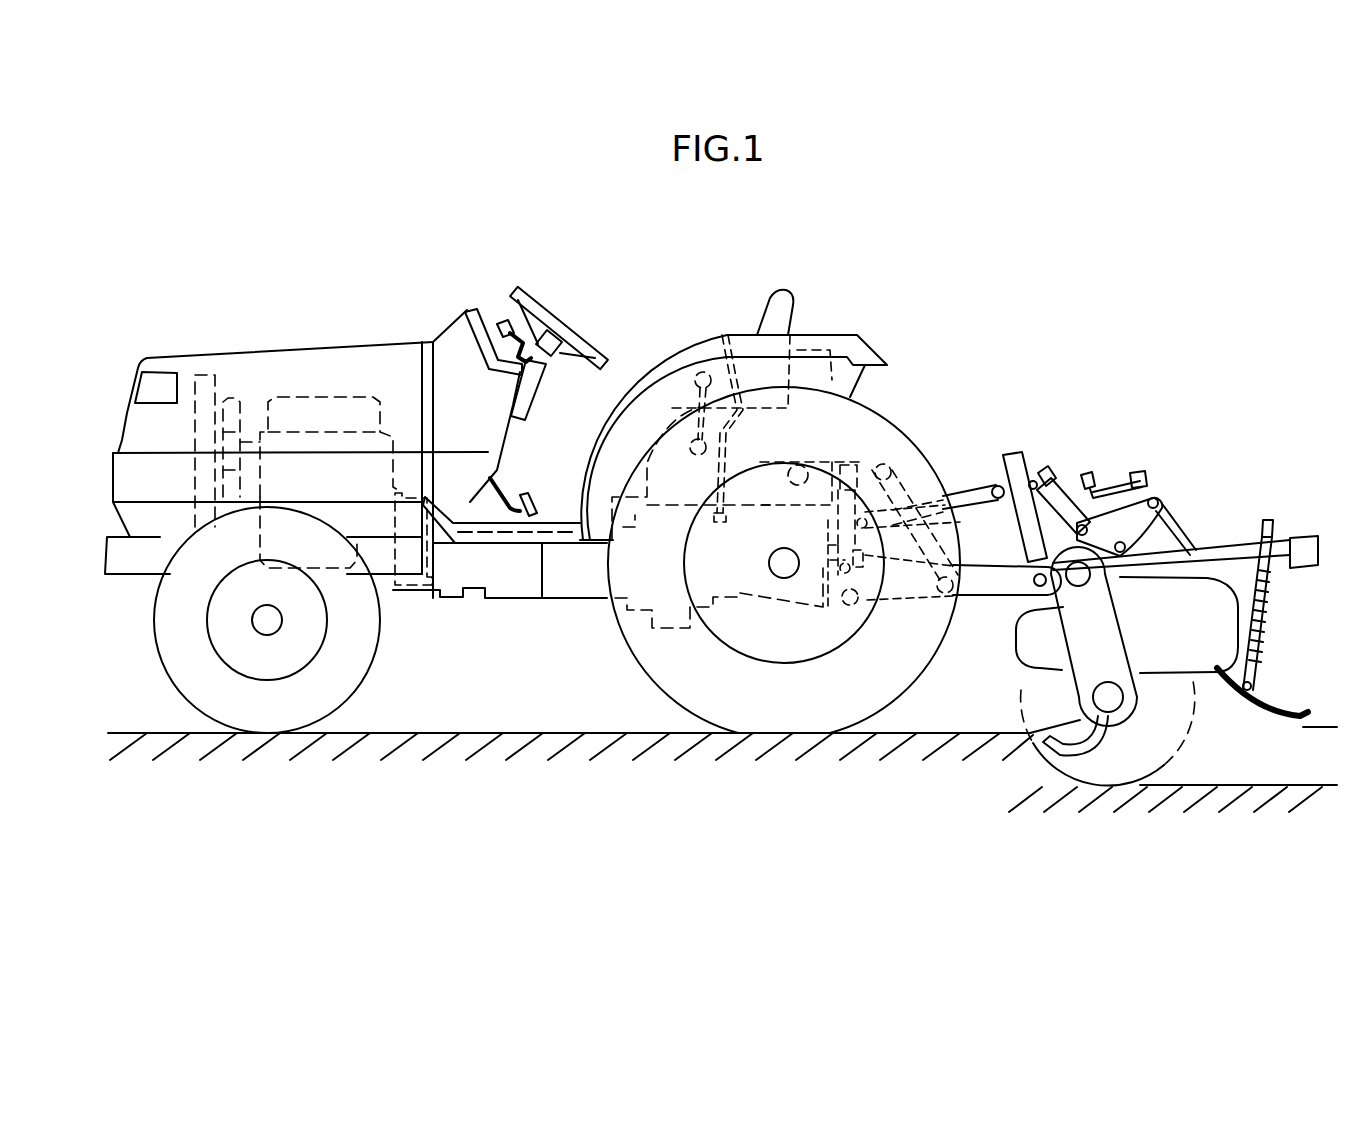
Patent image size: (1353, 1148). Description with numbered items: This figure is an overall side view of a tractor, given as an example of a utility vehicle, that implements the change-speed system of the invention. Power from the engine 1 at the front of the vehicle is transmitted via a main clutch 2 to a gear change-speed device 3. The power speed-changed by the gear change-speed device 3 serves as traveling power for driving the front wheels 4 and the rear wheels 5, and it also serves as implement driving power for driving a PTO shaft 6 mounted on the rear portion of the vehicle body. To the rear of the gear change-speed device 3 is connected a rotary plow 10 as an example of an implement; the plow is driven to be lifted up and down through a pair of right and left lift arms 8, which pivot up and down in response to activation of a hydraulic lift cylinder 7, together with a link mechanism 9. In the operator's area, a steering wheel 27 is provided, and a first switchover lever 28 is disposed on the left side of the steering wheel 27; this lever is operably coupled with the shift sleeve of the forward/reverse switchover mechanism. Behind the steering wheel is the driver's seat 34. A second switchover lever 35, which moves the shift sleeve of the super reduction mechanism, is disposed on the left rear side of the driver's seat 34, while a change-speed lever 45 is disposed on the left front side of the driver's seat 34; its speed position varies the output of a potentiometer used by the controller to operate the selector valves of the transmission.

The engine 1 is at (316, 396).
The main clutch 2 is at (412, 583).
The gear change-speed device 3 is at (743, 596).
The front wheels 4 is at (182, 683).
The rear wheels 5 is at (670, 688).
The PTO shaft 6 is at (995, 507).
The hydraulic lift cylinder 7 is at (827, 518).
The lift arms 8 is at (858, 468).
The link mechanism 9 is at (982, 597).
The rotary plow 10 is at (1208, 543).
The steering wheel 27 is at (560, 325).
The first switchover lever 28 is at (500, 325).
The driver's seat 34 is at (770, 313).
The second switchover lever 35 is at (722, 345).
The change-speed lever 45 is at (690, 376).